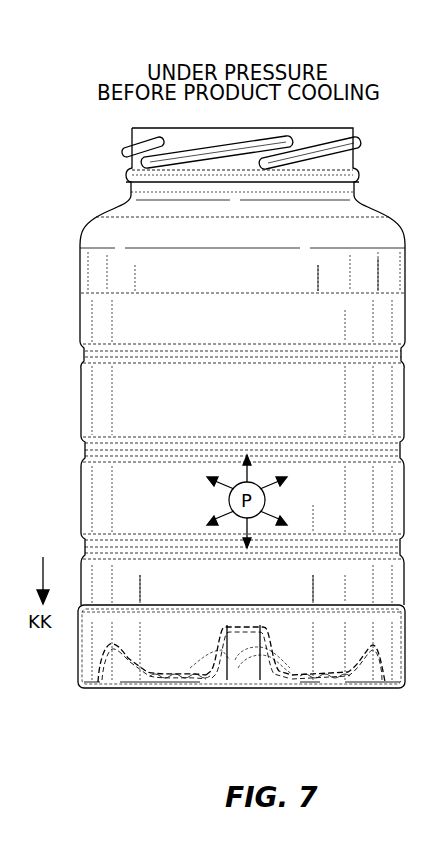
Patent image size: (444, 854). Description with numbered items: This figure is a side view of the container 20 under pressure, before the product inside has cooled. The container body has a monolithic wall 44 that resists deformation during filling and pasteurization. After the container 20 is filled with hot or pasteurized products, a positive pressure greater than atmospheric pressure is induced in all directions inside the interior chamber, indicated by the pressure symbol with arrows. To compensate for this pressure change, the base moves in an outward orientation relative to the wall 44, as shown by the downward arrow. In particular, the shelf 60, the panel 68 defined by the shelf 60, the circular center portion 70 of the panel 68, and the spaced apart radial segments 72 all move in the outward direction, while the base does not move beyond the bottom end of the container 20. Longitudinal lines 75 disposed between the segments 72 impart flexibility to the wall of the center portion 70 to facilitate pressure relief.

The container 20 is at (46, 182).
The wall 44 is at (82, 404).
The shelf 60 is at (112, 640).
The panel 68 is at (222, 668).
The circular center portion 70 is at (237, 625).
The radial segments 72 is at (282, 657).
The longitudinal lines or indents 75 is at (262, 625).